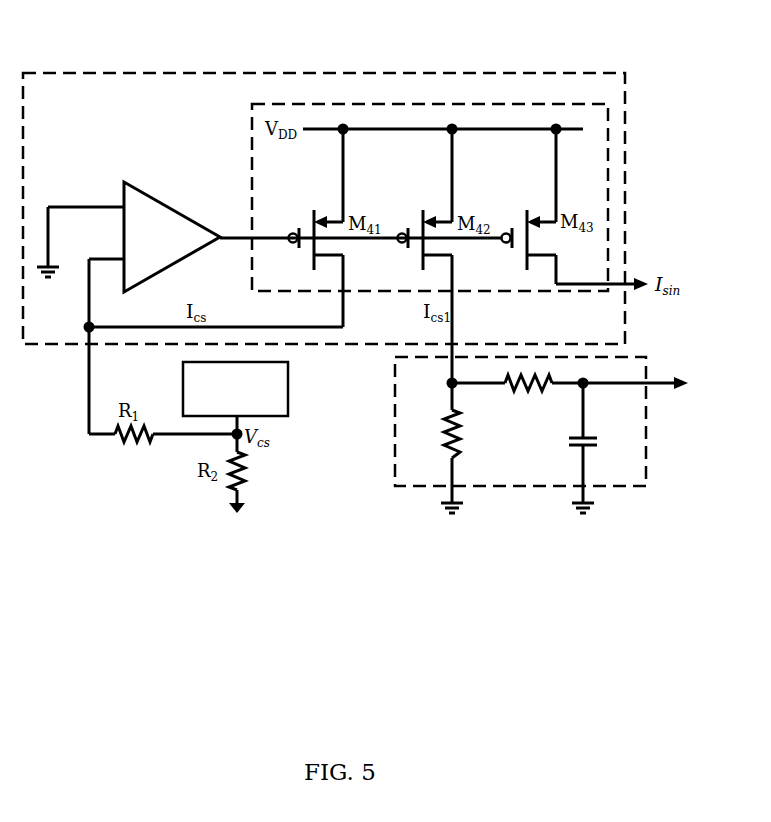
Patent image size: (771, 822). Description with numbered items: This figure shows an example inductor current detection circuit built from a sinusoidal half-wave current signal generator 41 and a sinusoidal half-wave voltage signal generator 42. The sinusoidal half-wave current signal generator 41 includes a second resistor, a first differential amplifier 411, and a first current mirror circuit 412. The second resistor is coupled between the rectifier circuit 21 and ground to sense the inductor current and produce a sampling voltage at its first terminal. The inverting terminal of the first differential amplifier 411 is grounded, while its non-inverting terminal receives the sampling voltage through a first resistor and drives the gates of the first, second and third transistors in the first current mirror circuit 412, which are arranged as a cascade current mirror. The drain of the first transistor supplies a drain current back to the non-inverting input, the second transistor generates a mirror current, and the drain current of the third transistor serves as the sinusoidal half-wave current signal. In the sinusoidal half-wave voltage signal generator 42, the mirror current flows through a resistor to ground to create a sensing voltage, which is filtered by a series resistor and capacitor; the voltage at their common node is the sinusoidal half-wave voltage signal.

The sinusoidal half-wave current signal generator 41 is at (471, 73).
The first differential amplifier 411 is at (172, 237).
The first current mirror circuit 412 is at (252, 147).
The sinusoidal half-wave voltage signal generator 42 is at (395, 452).
The rectifier circuit 21 is at (235, 389).